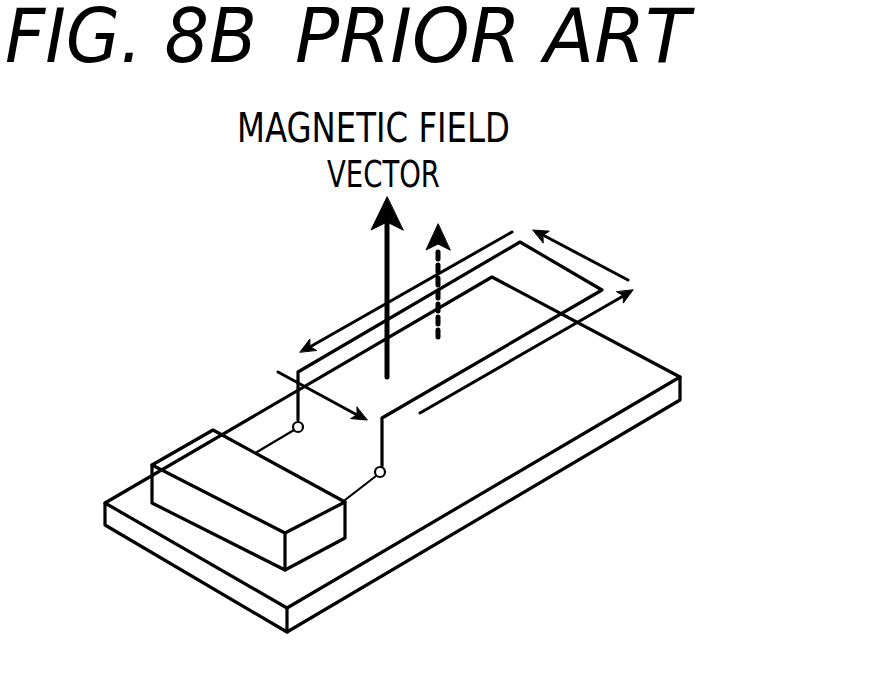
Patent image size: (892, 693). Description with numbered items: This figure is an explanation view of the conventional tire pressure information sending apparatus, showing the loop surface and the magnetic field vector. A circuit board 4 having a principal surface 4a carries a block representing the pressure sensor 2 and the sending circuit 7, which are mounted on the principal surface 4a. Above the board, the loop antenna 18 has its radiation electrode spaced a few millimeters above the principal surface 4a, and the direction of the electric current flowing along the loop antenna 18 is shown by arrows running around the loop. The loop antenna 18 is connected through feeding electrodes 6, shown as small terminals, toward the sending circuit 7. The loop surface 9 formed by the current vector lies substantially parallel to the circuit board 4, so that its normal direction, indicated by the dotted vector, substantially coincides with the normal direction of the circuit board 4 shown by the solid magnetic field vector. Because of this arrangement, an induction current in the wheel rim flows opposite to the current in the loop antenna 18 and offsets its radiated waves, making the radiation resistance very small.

The pressure sensor 2 is at (308, 530).
The sending circuit 7 is at (312, 532).
The circuit board 4 is at (528, 481).
The principal surface 4a is at (597, 362).
The feeding electrodes 6 is at (292, 427).
The loop surface 9 is at (502, 314).
The loop antenna 18 is at (573, 267).